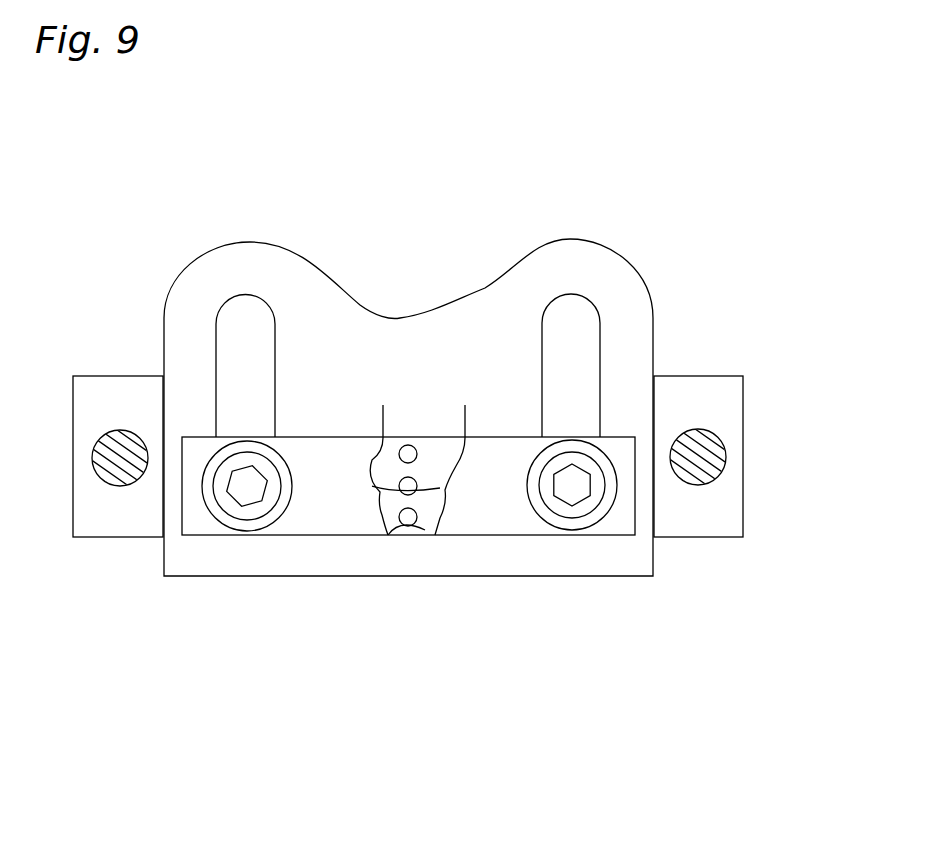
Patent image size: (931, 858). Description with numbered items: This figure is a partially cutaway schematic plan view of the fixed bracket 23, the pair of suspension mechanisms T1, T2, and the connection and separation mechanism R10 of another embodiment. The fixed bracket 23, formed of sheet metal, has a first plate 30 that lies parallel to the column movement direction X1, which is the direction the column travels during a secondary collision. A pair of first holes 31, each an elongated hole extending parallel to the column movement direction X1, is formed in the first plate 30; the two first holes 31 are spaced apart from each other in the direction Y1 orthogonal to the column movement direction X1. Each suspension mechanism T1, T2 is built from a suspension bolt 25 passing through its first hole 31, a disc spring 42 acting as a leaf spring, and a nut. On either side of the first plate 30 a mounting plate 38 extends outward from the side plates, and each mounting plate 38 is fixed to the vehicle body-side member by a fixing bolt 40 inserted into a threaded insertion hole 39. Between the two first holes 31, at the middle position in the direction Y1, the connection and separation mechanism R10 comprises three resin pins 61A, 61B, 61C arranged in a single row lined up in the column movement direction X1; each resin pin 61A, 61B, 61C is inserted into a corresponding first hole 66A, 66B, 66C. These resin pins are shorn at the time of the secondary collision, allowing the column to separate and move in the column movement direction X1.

The fixed bracket 23 is at (660, 346).
The suspension bolt 25 is at (232, 528).
The first plate 30 is at (393, 330).
The first hole 31 is at (245, 312).
The mounting plate 38 is at (85, 406).
The threaded insertion hole 39 is at (100, 457).
The fixing bolt 40 is at (120, 470).
The disc spring 42 is at (210, 522).
The resin pin 61A is at (433, 536).
The resin pin 61B is at (450, 432).
The resin pin 61C is at (413, 447).
The first hole 66A is at (380, 536).
The first hole 66B is at (398, 482).
The first hole 66C is at (391, 422).
The suspension mechanism T1 is at (285, 536).
The suspension mechanism T2 is at (529, 536).
The connection and separation mechanism R10 is at (408, 536).
The column movement direction X1 is at (410, 745).
The direction orthogonal to the column movement direction Y1 is at (367, 775).